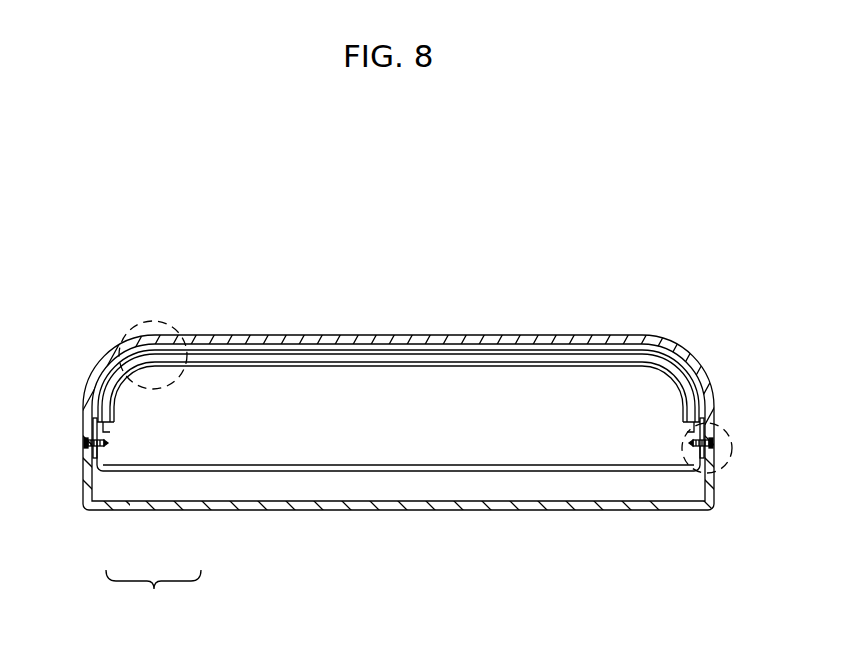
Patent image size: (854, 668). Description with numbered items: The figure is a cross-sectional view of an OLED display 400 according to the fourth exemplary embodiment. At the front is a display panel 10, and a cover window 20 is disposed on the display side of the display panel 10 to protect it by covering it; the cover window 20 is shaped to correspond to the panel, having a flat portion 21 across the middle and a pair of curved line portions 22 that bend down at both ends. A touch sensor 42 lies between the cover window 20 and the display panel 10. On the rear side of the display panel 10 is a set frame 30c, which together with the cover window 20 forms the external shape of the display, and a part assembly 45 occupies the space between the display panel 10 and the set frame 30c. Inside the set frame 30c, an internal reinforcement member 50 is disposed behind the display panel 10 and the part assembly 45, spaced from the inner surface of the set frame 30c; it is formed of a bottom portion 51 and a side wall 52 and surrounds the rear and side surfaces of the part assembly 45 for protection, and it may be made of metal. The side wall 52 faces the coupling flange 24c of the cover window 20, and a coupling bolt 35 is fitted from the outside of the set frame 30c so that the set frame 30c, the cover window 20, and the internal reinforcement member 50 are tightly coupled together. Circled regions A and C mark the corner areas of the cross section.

The OLED display 400 is at (358, 255).
The display panel 10 is at (567, 361).
The cover window 20 is at (88, 381).
The flat portion 21 is at (452, 339).
The curved line portions 22 is at (111, 359).
The coupling flange 24c is at (93, 429).
The set frame 30c is at (452, 507).
The coupling bolt 35 is at (83, 444).
The touch sensor 42 is at (528, 350).
The part assembly 45 is at (333, 452).
The internal reinforcement member 50 is at (153, 593).
The bottom portion 51 is at (158, 468).
The side wall 52 is at (97, 452).
The enlarged region A is at (156, 322).
The enlarged region C is at (717, 470).